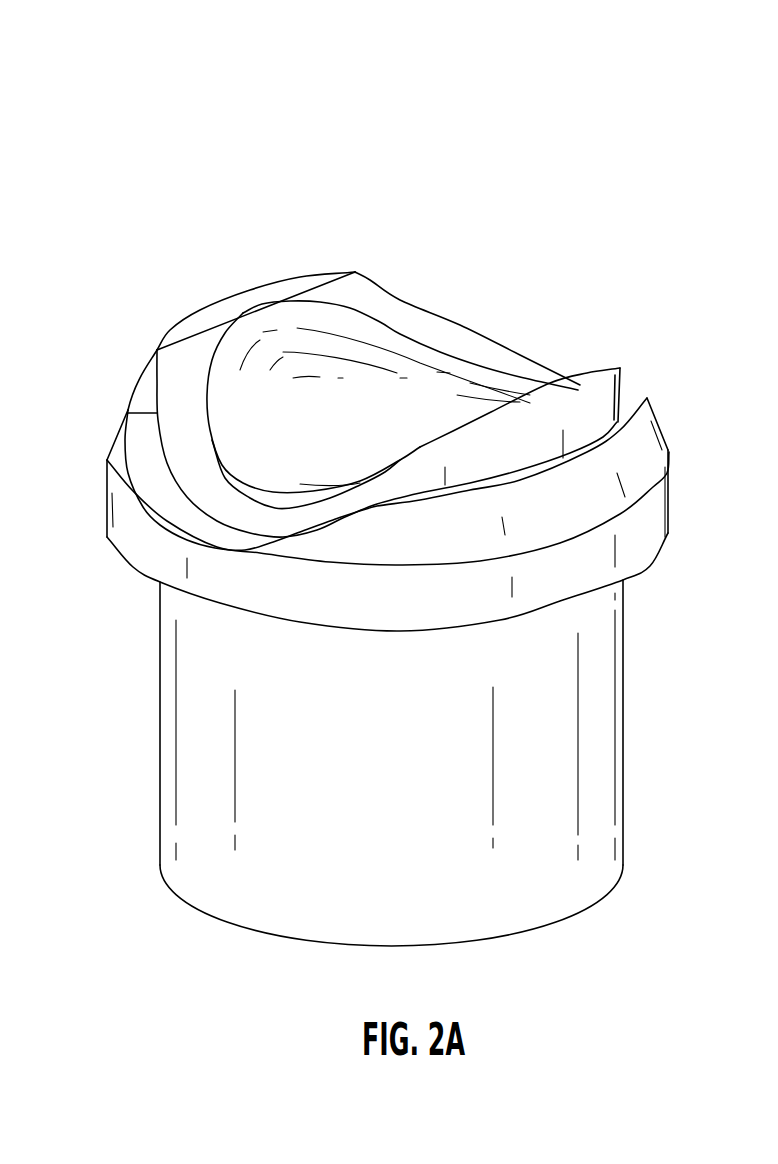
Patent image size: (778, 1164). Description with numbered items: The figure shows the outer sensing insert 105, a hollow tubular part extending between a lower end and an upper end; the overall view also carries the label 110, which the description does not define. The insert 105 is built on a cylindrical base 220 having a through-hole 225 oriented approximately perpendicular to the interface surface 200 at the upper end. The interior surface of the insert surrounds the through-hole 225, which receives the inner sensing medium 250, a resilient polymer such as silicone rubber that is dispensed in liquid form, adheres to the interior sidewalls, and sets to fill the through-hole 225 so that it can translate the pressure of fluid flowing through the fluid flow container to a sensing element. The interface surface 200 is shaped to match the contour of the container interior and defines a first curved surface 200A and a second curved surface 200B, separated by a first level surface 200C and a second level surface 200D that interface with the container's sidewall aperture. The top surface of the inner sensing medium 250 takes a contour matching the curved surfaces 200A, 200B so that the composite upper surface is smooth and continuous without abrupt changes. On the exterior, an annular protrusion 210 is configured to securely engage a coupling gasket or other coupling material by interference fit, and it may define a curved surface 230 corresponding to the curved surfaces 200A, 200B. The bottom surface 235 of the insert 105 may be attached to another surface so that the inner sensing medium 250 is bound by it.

The outer sensing insert 105 is at (537, 747).
The dispensing system 110 is at (366, 59).
The fluid flow container interface surface 200 is at (460, 312).
The first curved surface 200A is at (485, 350).
The second curved surface 200B is at (183, 418).
The first level surface 200C is at (574, 395).
The second level surface 200D is at (289, 282).
The annular protrusion 210 is at (638, 523).
The cylindrical base 220 is at (155, 783).
The through-hole 225 is at (210, 358).
The curved surface 230 is at (180, 523).
The bottom surface 235 is at (226, 922).
The inner sensing medium 250 is at (342, 415).